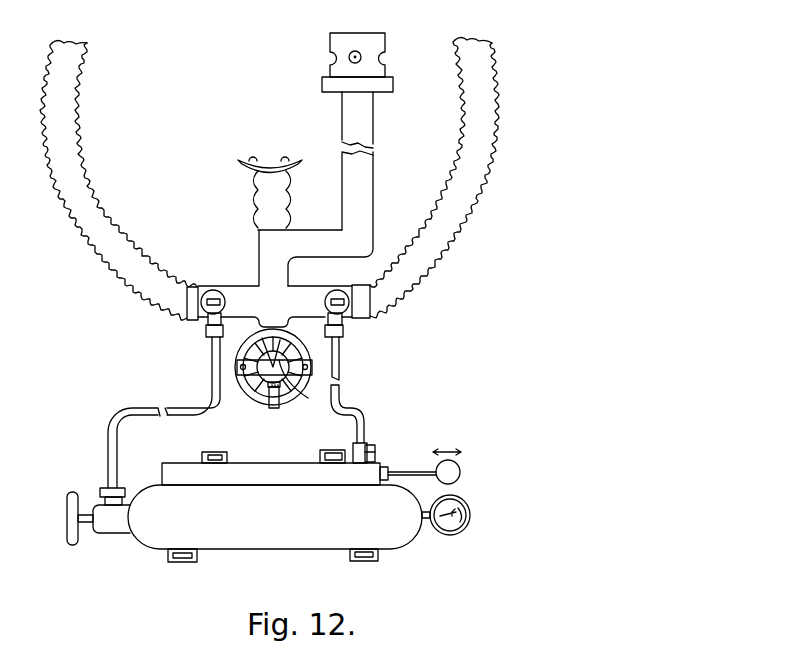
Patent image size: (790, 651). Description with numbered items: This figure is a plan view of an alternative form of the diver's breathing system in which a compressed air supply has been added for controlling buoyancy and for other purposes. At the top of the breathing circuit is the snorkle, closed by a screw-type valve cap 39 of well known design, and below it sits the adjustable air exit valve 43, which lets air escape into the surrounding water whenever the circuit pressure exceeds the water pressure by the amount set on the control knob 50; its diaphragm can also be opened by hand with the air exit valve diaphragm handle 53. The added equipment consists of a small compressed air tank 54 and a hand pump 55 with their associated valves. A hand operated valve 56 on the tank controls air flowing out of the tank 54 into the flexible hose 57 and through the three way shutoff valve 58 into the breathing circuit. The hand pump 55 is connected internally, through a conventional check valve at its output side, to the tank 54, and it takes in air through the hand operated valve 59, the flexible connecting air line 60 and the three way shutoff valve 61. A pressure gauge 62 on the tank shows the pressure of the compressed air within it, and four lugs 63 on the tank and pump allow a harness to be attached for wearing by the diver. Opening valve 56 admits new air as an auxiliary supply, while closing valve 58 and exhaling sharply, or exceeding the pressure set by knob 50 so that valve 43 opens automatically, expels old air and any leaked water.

The screw-type valve cap 39 is at (346, 43).
The adjustable air exit valve 43 is at (256, 390).
The control knob 50 is at (305, 384).
The air exit valve diaphragm handle 53 is at (270, 410).
The compressed air tank 54 is at (293, 540).
The hand pump 55 is at (278, 475).
The hand operated valve 56 is at (113, 522).
The flexible hose 57 is at (138, 412).
The three way shutoff valve 58 is at (208, 314).
The hand operated valve 59 is at (368, 443).
The flexible connecting air line 60 is at (341, 368).
The three way shutoff valve 61 is at (347, 311).
The pressure gauge 62 is at (472, 512).
The lugs 63 is at (213, 452).